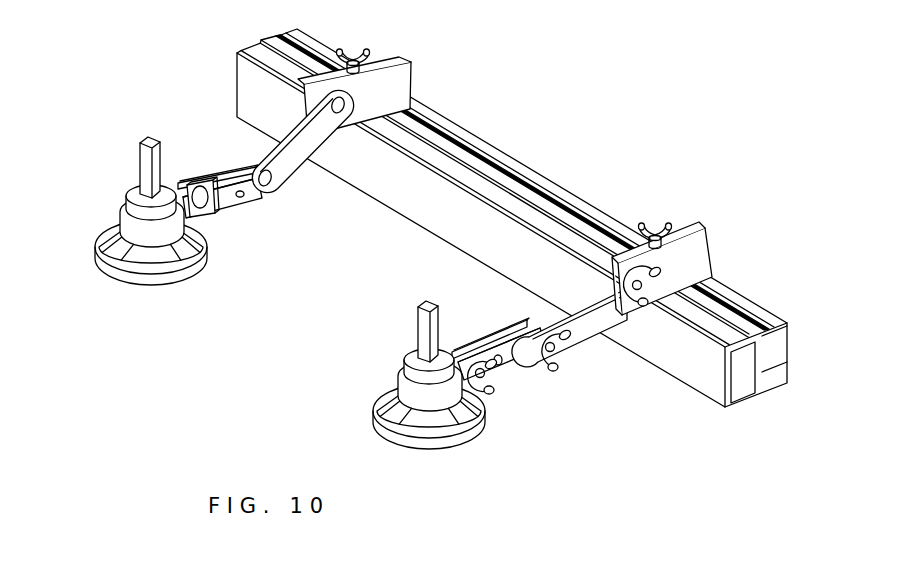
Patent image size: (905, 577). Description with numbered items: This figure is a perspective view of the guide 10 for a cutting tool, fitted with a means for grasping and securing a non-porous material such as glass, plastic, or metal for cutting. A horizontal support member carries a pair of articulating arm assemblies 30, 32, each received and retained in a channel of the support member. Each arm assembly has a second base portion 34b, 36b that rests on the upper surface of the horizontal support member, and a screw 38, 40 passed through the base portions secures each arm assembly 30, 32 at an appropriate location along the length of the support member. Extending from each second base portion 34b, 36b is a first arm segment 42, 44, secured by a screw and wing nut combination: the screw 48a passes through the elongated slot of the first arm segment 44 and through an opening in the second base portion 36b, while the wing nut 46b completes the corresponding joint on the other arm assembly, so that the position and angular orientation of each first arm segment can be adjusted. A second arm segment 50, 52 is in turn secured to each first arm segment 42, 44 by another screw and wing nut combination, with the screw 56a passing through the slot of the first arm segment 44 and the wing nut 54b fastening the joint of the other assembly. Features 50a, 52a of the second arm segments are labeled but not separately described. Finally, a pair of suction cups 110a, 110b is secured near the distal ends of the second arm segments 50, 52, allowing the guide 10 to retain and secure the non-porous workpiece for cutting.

The guide 10 is at (615, 159).
The arm assembly 30 is at (624, 336).
The arm assembly 32 is at (304, 167).
The second base portion 34b is at (705, 252).
The second base portion 36b is at (407, 96).
The screw 38 is at (656, 228).
The screw 40 is at (371, 50).
The first arm segment 42 is at (598, 313).
The first arm segment 44 is at (311, 151).
The wing nut 46b is at (641, 306).
The screw 48a is at (340, 112).
The second arm segment 50 is at (516, 364).
The extension arm plate 50a is at (518, 344).
The second arm segment 52 is at (223, 208).
The extension arm plate 52a is at (223, 186).
The wing nut 54b is at (555, 371).
The screw 56a is at (266, 183).
The suction cup 110a is at (442, 428).
The suction cup 110b is at (150, 252).